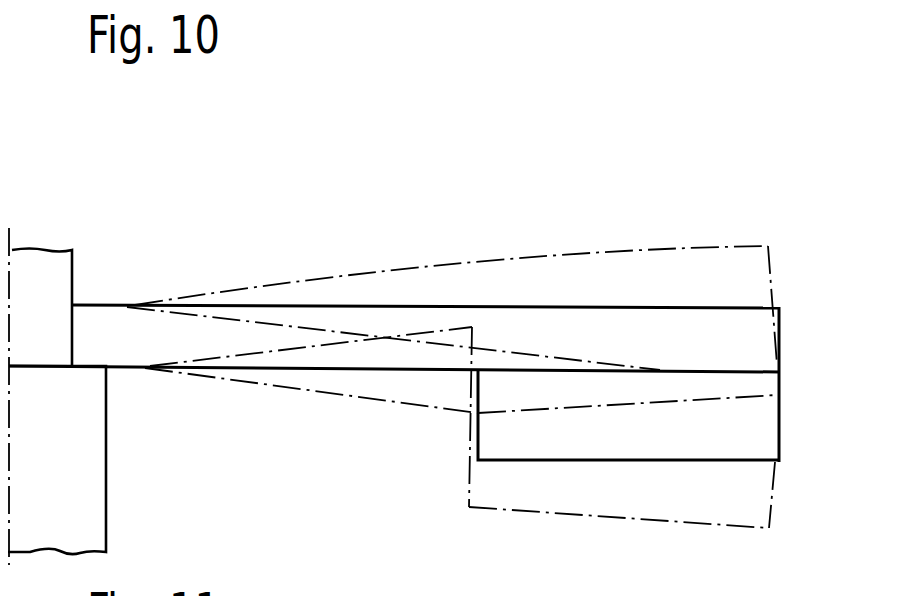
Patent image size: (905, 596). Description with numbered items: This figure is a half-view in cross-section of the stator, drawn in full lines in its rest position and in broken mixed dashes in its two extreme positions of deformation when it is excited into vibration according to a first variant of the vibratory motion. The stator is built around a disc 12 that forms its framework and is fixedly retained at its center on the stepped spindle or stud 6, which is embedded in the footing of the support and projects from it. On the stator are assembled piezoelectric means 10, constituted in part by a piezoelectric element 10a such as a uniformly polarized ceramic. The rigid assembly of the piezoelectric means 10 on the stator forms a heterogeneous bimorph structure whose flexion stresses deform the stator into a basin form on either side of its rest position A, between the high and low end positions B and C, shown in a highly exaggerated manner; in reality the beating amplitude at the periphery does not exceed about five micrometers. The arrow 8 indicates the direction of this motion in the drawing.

The stepped spindle or stud 6 is at (82, 497).
The direction arrow 8 is at (540, 282).
The piezoelectric means 10 is at (838, 404).
The piezoelectric element 10a is at (553, 433).
The disc 12 is at (322, 352).
The rest position A is at (782, 336).
The high end position B is at (774, 246).
The low end position C is at (775, 510).